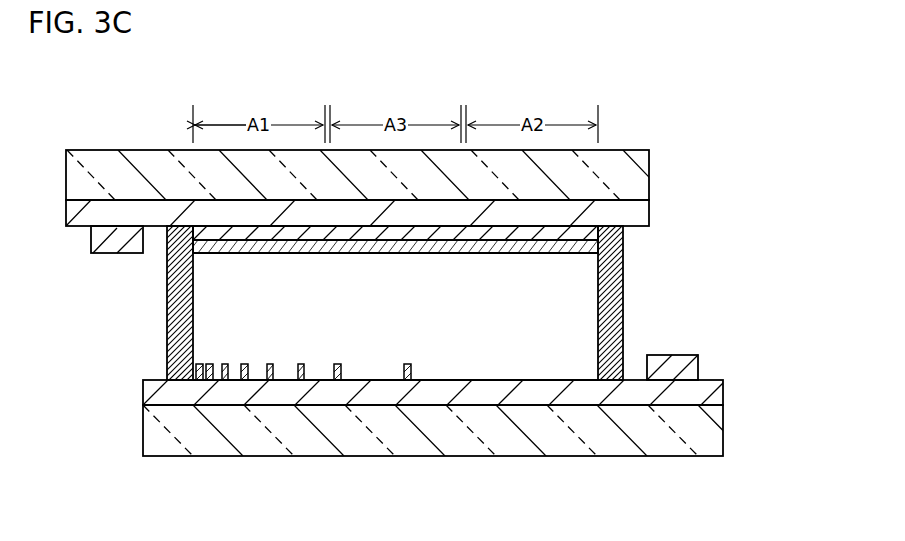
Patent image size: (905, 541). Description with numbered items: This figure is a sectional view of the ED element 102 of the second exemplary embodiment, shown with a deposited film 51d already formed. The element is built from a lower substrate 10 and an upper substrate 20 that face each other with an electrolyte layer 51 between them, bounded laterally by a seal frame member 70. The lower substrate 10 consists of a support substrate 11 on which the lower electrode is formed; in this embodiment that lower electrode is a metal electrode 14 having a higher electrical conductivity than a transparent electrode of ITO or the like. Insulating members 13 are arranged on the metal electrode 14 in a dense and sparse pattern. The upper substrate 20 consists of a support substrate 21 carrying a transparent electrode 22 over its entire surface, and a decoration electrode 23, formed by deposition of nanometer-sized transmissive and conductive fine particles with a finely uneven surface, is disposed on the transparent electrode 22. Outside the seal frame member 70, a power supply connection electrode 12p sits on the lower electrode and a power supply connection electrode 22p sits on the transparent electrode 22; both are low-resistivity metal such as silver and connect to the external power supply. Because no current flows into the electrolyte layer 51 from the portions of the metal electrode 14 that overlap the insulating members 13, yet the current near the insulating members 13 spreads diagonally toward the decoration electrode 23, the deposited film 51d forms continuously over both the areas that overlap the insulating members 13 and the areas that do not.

The ED element 102 is at (792, 506).
The upper substrate 20 is at (638, 137).
The support substrate 21 is at (649, 178).
The transparent electrode 22 is at (649, 218).
The power supply connection electrode 22p is at (118, 253).
The seal frame member 70 is at (623, 280).
The decoration electrode 23 is at (318, 236).
The deposited film 51d is at (388, 262).
The electrolyte layer 51 is at (546, 301).
The insulating members 13 is at (407, 355).
The lower substrate 10 is at (132, 435).
The power supply connection electrode 12p is at (698, 368).
The metal electrode 14 is at (725, 394).
The support substrate 11 is at (723, 432).